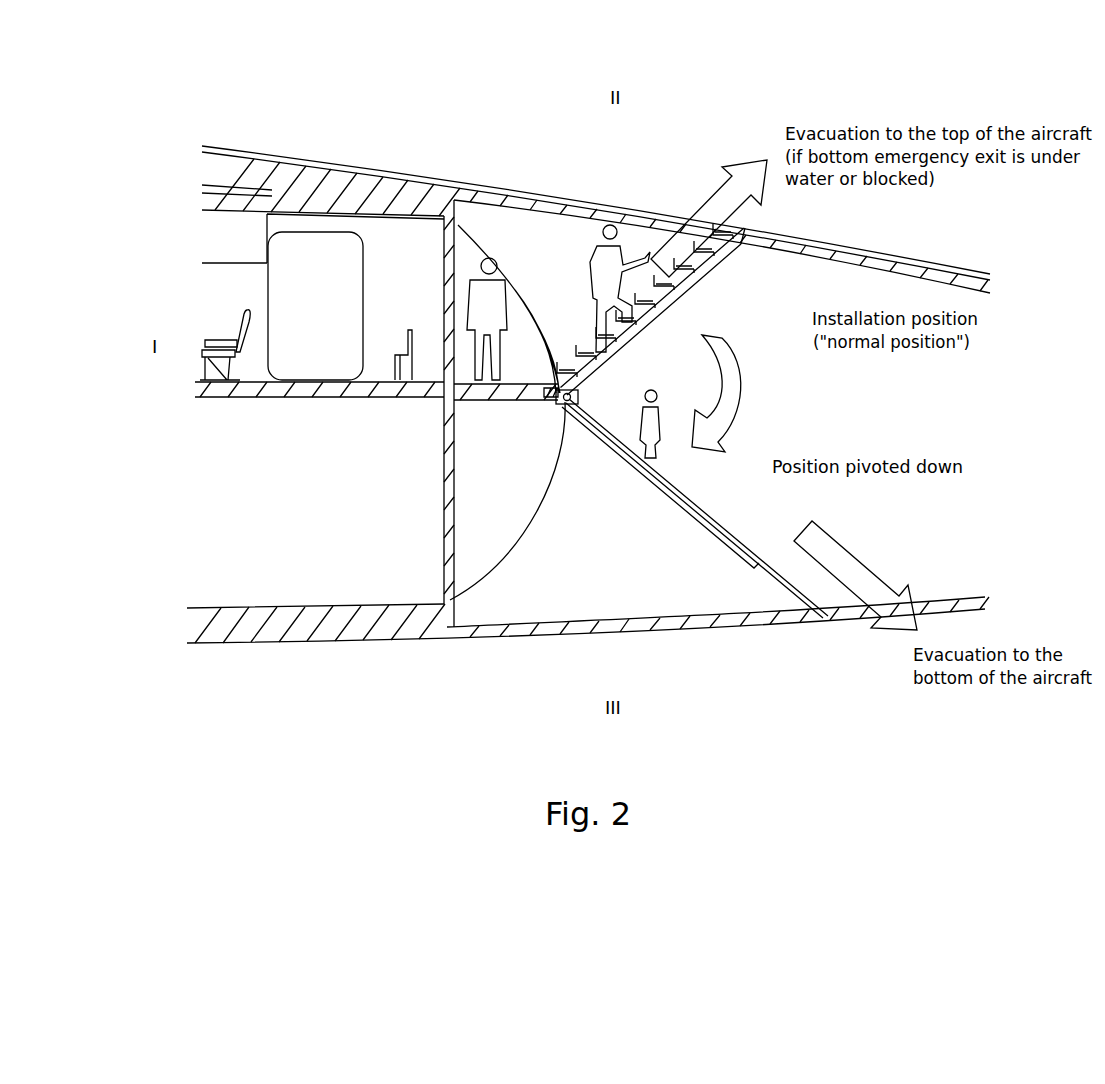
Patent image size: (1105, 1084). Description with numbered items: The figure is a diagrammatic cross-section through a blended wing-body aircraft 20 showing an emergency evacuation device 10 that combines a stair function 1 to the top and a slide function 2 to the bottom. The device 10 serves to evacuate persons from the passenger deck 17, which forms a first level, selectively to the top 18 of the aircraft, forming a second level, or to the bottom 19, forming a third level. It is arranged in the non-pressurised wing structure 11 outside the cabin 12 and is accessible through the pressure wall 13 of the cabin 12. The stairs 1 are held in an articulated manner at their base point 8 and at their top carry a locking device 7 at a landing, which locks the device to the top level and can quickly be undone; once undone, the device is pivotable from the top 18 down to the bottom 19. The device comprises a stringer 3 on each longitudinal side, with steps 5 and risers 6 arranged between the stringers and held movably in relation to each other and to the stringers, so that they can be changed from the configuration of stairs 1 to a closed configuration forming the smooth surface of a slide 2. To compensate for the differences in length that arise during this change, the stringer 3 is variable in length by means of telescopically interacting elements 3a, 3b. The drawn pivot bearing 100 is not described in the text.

The stair function 1 is at (840, 426).
The slide function 2 is at (955, 541).
The stringer 3 is at (695, 508).
The telescopically interacting element 3a is at (643, 477).
The telescopically interacting element 3b is at (613, 515).
The steps 5 is at (695, 287).
The risers 6 is at (672, 292).
The locking device 7 is at (757, 237).
The base point 8 is at (568, 405).
The emergency evacuation device 10 is at (1083, 452).
The non-pressurised wing structure 11 is at (1084, 291).
The cabin 12 is at (265, 493).
The pressure wall 13 is at (474, 592).
The passenger deck 17 is at (205, 388).
The top 18 is at (450, 173).
The bottom 19 is at (528, 652).
The blended wing-body aircraft 20 is at (299, 96).
The pivot bearing 100 is at (548, 402).